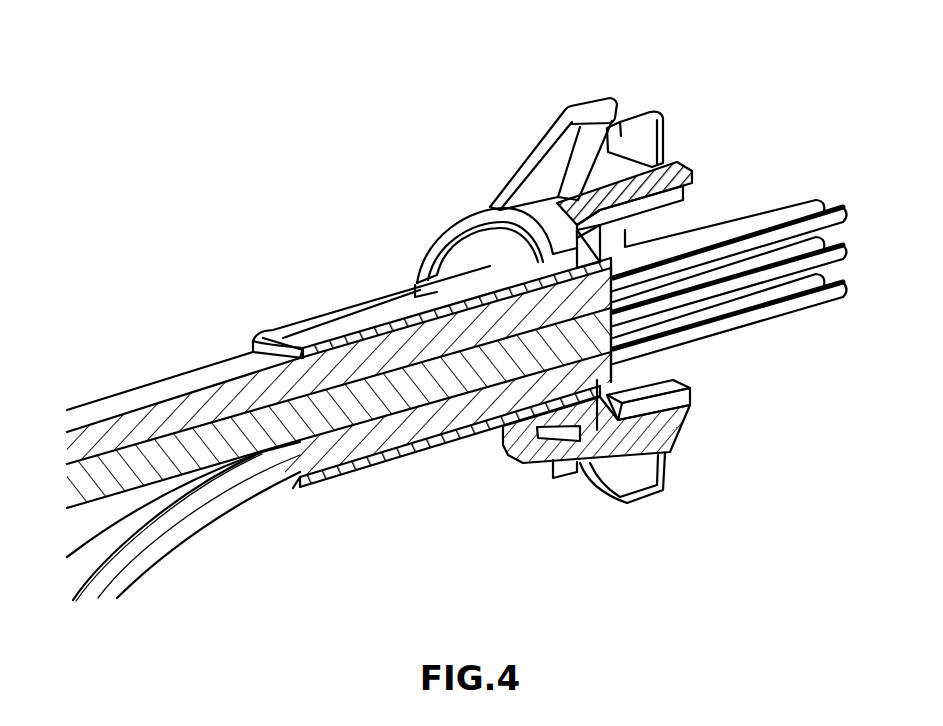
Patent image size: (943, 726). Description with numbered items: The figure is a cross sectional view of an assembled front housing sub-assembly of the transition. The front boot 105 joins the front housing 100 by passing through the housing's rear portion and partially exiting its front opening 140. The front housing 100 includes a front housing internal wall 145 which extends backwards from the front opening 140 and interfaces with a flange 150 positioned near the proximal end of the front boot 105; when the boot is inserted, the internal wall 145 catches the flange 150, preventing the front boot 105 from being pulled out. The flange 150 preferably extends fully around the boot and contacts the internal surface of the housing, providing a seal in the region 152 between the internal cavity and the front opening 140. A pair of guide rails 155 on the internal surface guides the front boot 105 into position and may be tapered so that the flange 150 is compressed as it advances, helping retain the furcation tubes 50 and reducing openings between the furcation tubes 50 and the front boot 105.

The furcation tubes 50 is at (815, 320).
The front housing 100 is at (618, 93).
The front boot 105 is at (392, 462).
The front opening 140 is at (450, 270).
The front housing internal wall 145 is at (563, 240).
The flange 150 is at (668, 186).
The region 152 is at (614, 436).
The guide rails 155 is at (668, 215).